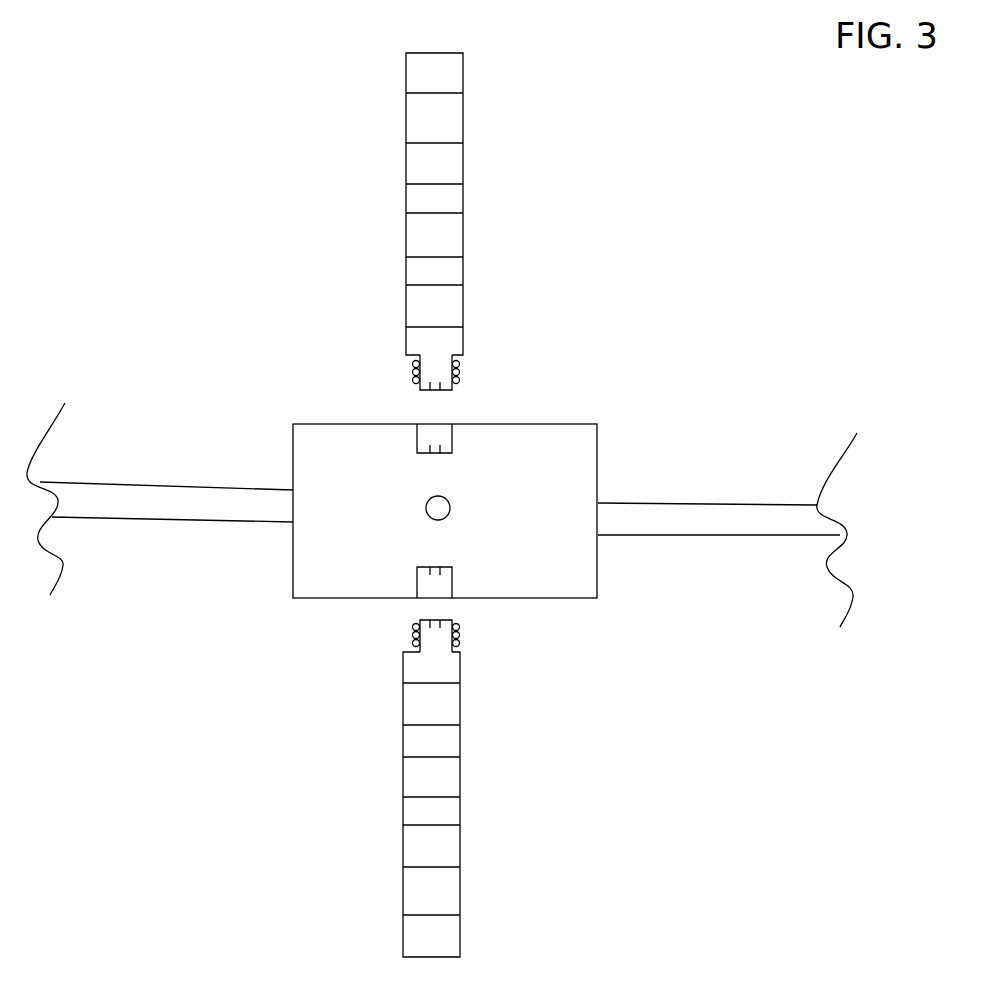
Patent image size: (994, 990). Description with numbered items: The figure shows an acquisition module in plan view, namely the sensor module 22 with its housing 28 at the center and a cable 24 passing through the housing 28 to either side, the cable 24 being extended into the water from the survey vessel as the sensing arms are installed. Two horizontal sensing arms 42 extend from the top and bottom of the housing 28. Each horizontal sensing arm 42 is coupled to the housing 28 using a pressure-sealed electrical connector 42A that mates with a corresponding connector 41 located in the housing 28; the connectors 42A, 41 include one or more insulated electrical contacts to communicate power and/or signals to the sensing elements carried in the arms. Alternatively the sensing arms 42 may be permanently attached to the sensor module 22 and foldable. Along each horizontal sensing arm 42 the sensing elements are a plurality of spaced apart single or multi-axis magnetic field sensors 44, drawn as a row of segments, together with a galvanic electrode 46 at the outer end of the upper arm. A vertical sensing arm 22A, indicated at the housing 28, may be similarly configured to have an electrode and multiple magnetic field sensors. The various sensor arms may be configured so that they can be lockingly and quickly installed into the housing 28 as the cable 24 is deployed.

The sensor module 22 is at (637, 368).
The vertical sensing arm 22A is at (451, 507).
The cable 24 is at (202, 522).
The housing 28 is at (550, 437).
The connectors 41 is at (417, 445).
The horizontal sensing arms 42 is at (405, 342).
The pressure-sealed electrical connectors 42A is at (460, 372).
The magnetic field sensors 44 is at (452, 165).
The galvanic electrode 46 is at (448, 77).